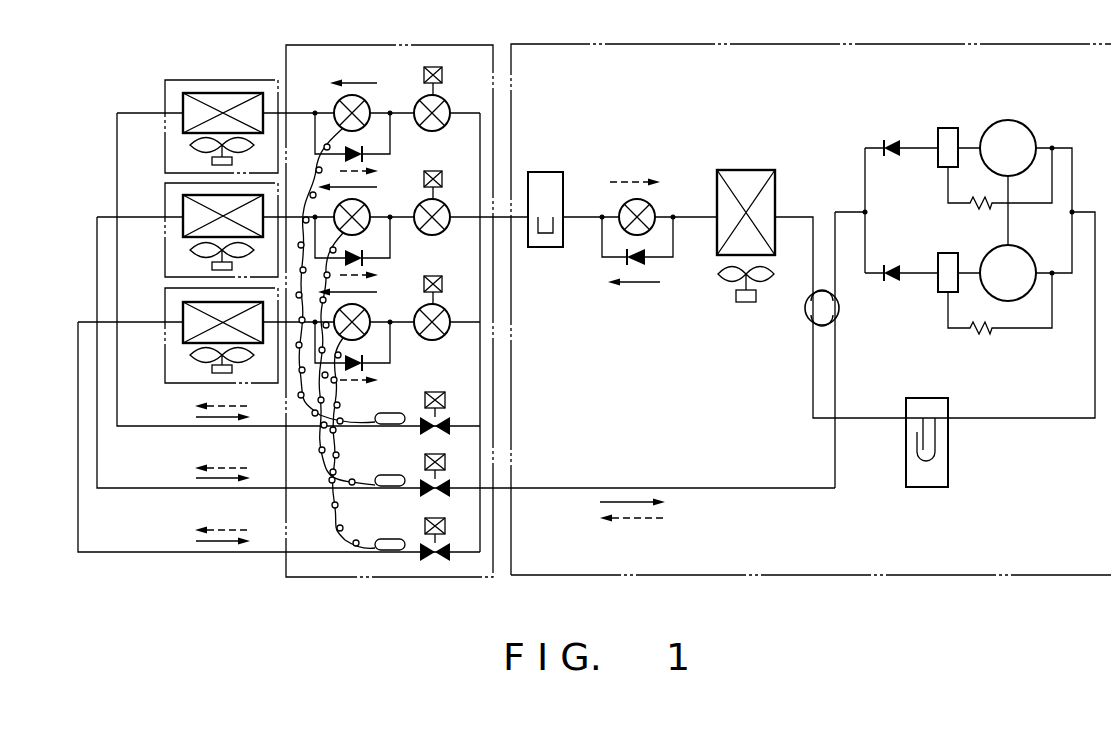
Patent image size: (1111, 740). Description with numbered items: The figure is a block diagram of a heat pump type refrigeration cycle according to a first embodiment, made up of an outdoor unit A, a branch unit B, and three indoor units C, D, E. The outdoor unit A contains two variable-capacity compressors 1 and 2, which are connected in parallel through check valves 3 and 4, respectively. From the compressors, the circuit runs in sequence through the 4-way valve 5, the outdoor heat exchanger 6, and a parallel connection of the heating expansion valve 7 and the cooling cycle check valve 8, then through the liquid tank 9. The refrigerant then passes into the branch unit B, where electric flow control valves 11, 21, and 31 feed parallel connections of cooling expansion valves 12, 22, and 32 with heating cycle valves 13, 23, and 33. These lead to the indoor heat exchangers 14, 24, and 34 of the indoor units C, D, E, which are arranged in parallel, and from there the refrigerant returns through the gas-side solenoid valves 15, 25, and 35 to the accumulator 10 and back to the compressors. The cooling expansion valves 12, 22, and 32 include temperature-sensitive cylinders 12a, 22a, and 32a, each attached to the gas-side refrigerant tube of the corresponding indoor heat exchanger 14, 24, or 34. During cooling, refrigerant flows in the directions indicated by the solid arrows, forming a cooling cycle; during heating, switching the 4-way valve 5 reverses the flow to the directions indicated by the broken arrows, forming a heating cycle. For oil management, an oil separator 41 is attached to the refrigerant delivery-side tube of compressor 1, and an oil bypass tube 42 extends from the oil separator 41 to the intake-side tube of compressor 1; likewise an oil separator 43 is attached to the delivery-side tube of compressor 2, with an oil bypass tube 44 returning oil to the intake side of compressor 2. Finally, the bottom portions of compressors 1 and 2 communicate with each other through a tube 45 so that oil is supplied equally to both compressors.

The variable-capacity compressor 1 is at (1010, 125).
The variable-capacity compressor 2 is at (1022, 254).
The check valve 3 is at (888, 140).
The check valve 4 is at (892, 265).
The 4-way valve 5 is at (836, 314).
The outdoor heat exchanger 6 is at (742, 183).
The heating expansion valve 7 is at (652, 207).
The cooling cycle check valve 8 is at (648, 258).
The liquid tank 9 is at (546, 183).
The accumulator 10 is at (948, 470).
The electric flow control valve 11 is at (444, 103).
The cooling expansion valve 12 is at (364, 103).
The heating cycle valve 13 is at (363, 155).
The indoor heat exchanger 14 is at (204, 93).
The gas-side valve (solenoid valve) 15 is at (441, 418).
The temperature-sensitive cylinder 12a is at (386, 407).
The electric flow control valve 21 is at (445, 208).
The cooling expansion valve 22 is at (364, 208).
The heating cycle valve 23 is at (363, 259).
The indoor heat exchanger 24 is at (193, 222).
The gas-side valve (solenoid valve) 25 is at (441, 481).
The temperature-sensitive cylinder 22a is at (390, 476).
The electric flow control valve 31 is at (445, 313).
The cooling expansion valve 32 is at (364, 313).
The heating cycle valve 33 is at (363, 364).
The indoor heat exchanger 34 is at (195, 328).
The gas-side valve (solenoid valve) 35 is at (441, 546).
The temperature-sensitive cylinder 32a is at (388, 540).
The oil separator 41 is at (938, 158).
The oil bypass tube 42 is at (1028, 203).
The oil separator 43 is at (940, 286).
The oil bypass tube 44 is at (1022, 328).
The tube 45 is at (1006, 232).
The outdoor unit A is at (1010, 575).
The branch unit B is at (358, 582).
The indoor unit C is at (193, 109).
The indoor unit D is at (201, 221).
The indoor unit E is at (200, 332).